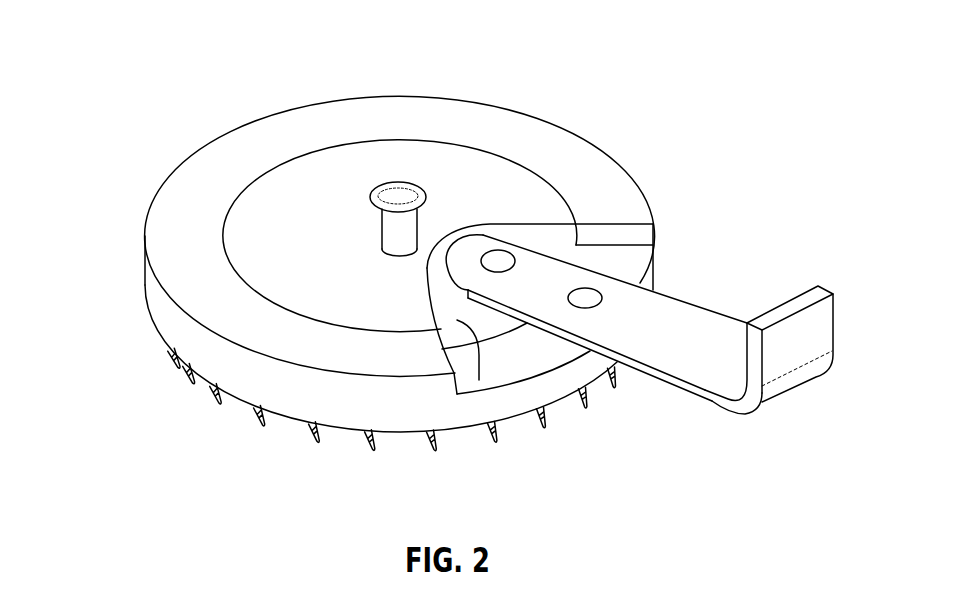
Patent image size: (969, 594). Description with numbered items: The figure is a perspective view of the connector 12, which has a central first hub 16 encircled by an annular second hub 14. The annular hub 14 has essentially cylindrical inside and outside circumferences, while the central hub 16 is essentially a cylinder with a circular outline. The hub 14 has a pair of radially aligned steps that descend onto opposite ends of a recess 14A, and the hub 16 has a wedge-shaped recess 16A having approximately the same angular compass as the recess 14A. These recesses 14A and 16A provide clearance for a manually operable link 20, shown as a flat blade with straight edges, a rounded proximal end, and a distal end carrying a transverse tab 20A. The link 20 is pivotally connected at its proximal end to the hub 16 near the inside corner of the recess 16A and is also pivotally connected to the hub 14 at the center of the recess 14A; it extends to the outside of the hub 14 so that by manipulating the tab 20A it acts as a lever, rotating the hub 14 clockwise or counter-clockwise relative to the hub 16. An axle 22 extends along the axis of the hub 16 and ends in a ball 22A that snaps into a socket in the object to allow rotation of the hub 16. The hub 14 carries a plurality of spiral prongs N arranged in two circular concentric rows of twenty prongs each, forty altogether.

The connector 12 is at (138, 81).
The annular second hub 14 is at (552, 137).
The recess 14A is at (613, 263).
The central first hub 16 is at (257, 250).
The wedge-shaped recess 16A is at (479, 380).
The axle 22 is at (380, 220).
The ball 22A is at (404, 193).
The manually operable link 20 is at (700, 390).
The transverse tab 20A is at (796, 304).
The spiral prongs N is at (243, 413).